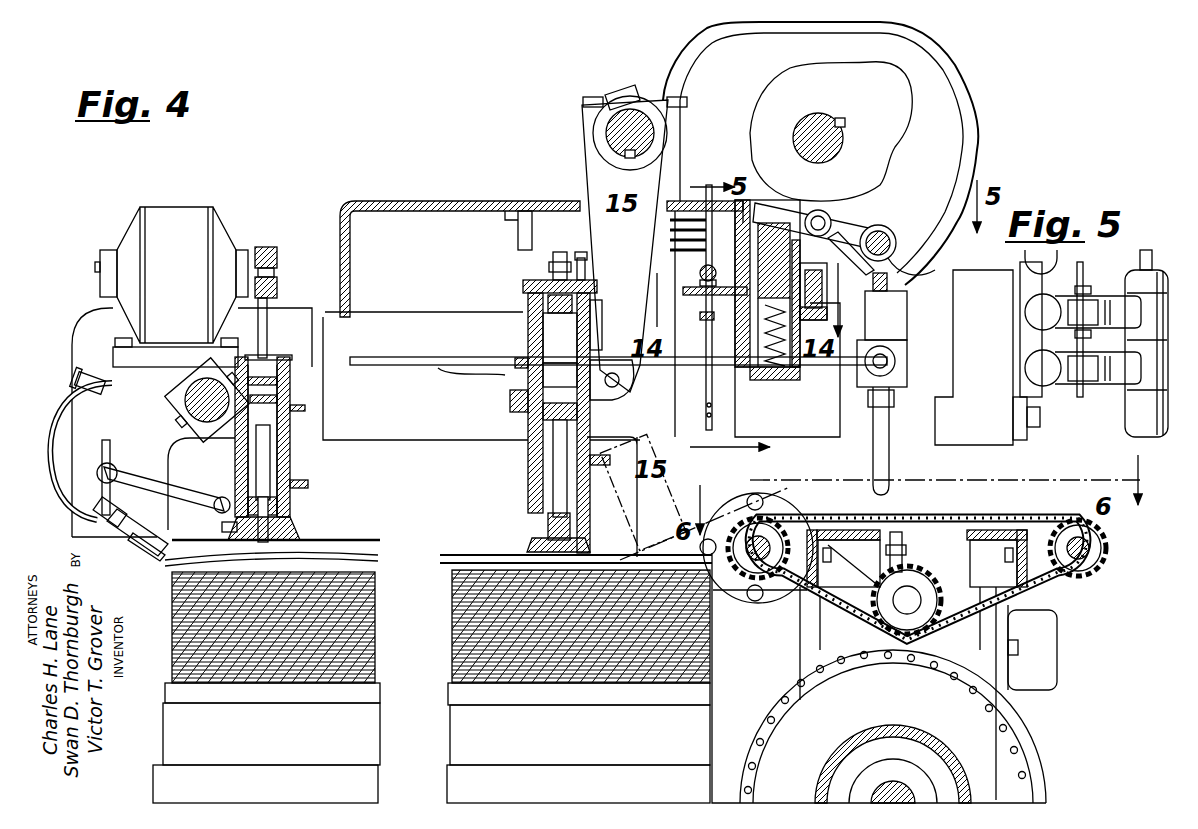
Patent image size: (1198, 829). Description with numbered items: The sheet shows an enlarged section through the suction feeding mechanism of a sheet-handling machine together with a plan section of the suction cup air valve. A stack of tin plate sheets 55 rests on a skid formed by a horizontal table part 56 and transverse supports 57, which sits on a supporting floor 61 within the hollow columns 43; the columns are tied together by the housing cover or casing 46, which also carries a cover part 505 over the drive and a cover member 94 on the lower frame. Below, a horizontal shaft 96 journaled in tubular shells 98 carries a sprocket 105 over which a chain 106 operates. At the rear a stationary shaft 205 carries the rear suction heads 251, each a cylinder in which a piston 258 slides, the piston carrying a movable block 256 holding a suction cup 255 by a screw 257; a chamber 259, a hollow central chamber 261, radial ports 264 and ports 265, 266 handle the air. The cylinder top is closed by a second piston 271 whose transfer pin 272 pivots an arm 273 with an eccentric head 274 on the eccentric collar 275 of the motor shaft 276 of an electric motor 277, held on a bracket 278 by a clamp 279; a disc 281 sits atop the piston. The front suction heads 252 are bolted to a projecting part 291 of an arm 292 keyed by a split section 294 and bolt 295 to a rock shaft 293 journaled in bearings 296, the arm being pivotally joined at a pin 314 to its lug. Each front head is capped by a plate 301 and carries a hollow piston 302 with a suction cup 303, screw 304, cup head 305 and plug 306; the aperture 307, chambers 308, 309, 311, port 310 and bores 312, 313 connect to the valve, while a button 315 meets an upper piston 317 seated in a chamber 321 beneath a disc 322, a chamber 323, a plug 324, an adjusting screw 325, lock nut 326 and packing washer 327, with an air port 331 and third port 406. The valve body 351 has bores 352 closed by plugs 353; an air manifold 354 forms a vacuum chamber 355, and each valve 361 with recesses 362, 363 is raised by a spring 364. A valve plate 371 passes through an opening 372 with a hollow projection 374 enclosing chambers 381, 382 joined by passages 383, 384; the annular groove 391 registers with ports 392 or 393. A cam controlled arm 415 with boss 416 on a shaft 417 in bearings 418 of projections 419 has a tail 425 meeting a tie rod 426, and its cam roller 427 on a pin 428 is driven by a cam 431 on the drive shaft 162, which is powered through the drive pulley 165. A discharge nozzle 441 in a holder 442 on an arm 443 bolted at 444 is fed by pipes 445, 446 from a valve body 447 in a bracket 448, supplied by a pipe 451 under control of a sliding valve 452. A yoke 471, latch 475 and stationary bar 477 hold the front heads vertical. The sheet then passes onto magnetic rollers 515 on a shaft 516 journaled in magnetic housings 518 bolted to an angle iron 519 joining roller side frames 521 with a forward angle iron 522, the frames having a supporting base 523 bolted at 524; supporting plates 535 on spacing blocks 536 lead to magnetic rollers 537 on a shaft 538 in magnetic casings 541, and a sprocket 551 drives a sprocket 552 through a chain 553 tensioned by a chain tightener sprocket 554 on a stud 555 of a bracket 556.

In FIG. 4, the hollow columns 43 is at (414, 555).
In FIG. 4, the housing cover or casing 46 is at (720, 205).
In FIG. 5, the housing cover or casing 46 is at (997, 445).
In FIG. 4, the sheets 55 is at (385, 556).
In FIG. 4, the horizontal table part 56 is at (380, 693).
In FIG. 4, the transverse supports 57 is at (380, 730).
In FIG. 4, the supporting floor 61 is at (378, 782).
In FIG. 4, the cover 94 is at (1050, 665).
In FIG. 4, the horizontal shaft 96 is at (890, 783).
In FIG. 4, the tubular shells 98 is at (925, 770).
In FIG. 4, the sprocket 105 is at (874, 764).
In FIG. 4, the chain 106 is at (1035, 737).
In FIG. 4, the horizontal drive shaft 162 is at (825, 113).
In FIG. 4, the drive pulley 165 is at (962, 80).
In FIG. 4, the horizontal stationary supporting shaft 205 is at (200, 425).
In FIG. 4, the rear suction heads 251 is at (290, 467).
In FIG. 4, the front suction heads 252 is at (590, 418).
In FIG. 4, the suction rubber or suction cup 255 is at (300, 535).
In FIG. 4, the movable block 256 is at (290, 510).
In FIG. 4, the screw 257 is at (222, 528).
In FIG. 4, the piston 258 is at (236, 461).
In FIG. 4, the chamber 259 is at (248, 484).
In FIG. 4, the hollow central chamber 261 is at (268, 450).
In FIG. 4, the radial ports 264 is at (270, 433).
In FIG. 4, the port 265 is at (308, 485).
In FIG. 4, the second radial port 266 is at (305, 408).
In FIG. 4, the second piston 271 is at (285, 358).
In FIG. 4, the transfer pin 272 is at (277, 381).
In FIG. 4, the arm 273 is at (267, 318).
In FIG. 4, the eccentric strap form of head 274 is at (268, 247).
In FIG. 4, the eccentric collar 275 is at (278, 260).
In FIG. 4, the motor shaft 276 is at (276, 271).
In FIG. 4, the electric motor 277 is at (171, 275).
In FIG. 4, the bracket 278 is at (193, 347).
In FIG. 4, the clamp 279 is at (185, 410).
In FIG. 4, the disc 281 is at (277, 399).
In FIG. 4, the projecting part 291 is at (592, 295).
In FIG. 4, the arm 292 is at (606, 186).
In FIG. 4, the rock shaft 293 is at (612, 135).
In FIG. 4, the split section 294 is at (640, 105).
In FIG. 4, the bolt 295 is at (617, 85).
In FIG. 4, the bearings 296 is at (582, 160).
In FIG. 4, the plate 301 is at (525, 285).
In FIG. 4, the hollow piston 302 is at (530, 468).
In FIG. 4, the suction rubber or cup 303 is at (588, 547).
In FIG. 4, the threaded screw 304 is at (548, 520).
In FIG. 4, the cup head 305 is at (535, 540).
In FIG. 4, the plug 306 is at (545, 510).
In FIG. 4, the central aperture 307 is at (575, 490).
In FIG. 4, the chamber 308 is at (553, 452).
In FIG. 4, the chamber 309 is at (530, 433).
In FIG. 4, the small port 310 is at (577, 428).
In FIG. 4, the chamber 311 is at (560, 375).
In FIG. 4, the radial bore 312 is at (515, 362).
In FIG. 4, the radial bore 313 is at (620, 455).
In FIG. 4, the pin 314 is at (600, 348).
In FIG. 4, the button 315 is at (592, 405).
In FIG. 4, the upper piston 317 is at (532, 312).
In FIG. 4, the chamber 321 is at (530, 300).
In FIG. 4, the disc 322 is at (590, 285).
In FIG. 4, the central chamber 323 is at (543, 345).
In FIG. 4, the plug 324 is at (602, 315).
In FIG. 4, the adjusting screw 325 is at (549, 268).
In FIG. 4, the lock nut 326 is at (558, 258).
In FIG. 4, the packing washer 327 is at (550, 285).
In FIG. 4, the air port 331 is at (543, 330).
In FIG. 4, the valve body or cylinder block 351 is at (800, 372).
In FIG. 5, the valve body or cylinder block 351 is at (1013, 288).
In FIG. 4, the cylindrical bores 352 is at (800, 380).
In FIG. 5, the cylindrical bores 352 is at (1020, 263).
In FIG. 4, the plug 353 is at (775, 380).
In FIG. 4, the air manifold 354 is at (851, 253).
In FIG. 4, the manifold chamber 355 is at (827, 285).
In FIG. 4, the valve 361 is at (790, 240).
In FIG. 5, the valve 361 is at (990, 359).
In FIG. 4, the recess 362 is at (827, 303).
In FIG. 4, the recess 363 is at (815, 390).
In FIG. 4, the spring 364 is at (787, 390).
In FIG. 4, the valve plate 371 is at (706, 345).
In FIG. 4, the opening 372 is at (703, 235).
In FIG. 4, the hollow projection 374 is at (700, 292).
In FIG. 4, the chamber 381 is at (700, 283).
In FIG. 4, the chamber 382 is at (702, 318).
In FIG. 4, the air passage 383 is at (700, 270).
In FIG. 4, the air passage 384 is at (710, 330).
In FIG. 4, the annular groove 391 is at (815, 219).
In FIG. 4, the second port 392 is at (827, 223).
In FIG. 4, the second port 393 is at (814, 313).
In FIG. 4, the third port 406 is at (582, 258).
In FIG. 4, the cam controlled arm 415 is at (775, 215).
In FIG. 5, the cam controlled arm 415 is at (1025, 318).
In FIG. 4, the boss 416 is at (895, 235).
In FIG. 5, the boss 416 is at (1111, 312).
In FIG. 4, the horizontal stationary shaft 417 is at (898, 243).
In FIG. 5, the horizontal stationary shaft 417 is at (1135, 437).
In FIG. 5, the bearings 418 is at (1140, 400).
In FIG. 4, the projections 419 is at (880, 225).
In FIG. 5, the projections 419 is at (1085, 430).
In FIG. 4, the tail 425 is at (905, 252).
In FIG. 4, the tie rod 426 is at (905, 258).
In FIG. 5, the tie rod 426 is at (1140, 258).
In FIG. 4, the cam roller 427 is at (835, 215).
In FIG. 5, the cam roller 427 is at (1083, 381).
In FIG. 4, the pin 428 is at (818, 210).
In FIG. 5, the pin 428 is at (1100, 285).
In FIG. 4, the cam 431 is at (888, 85).
In FIG. 4, the discharge nozzle 441 is at (158, 552).
In FIG. 4, the holder 442 is at (95, 510).
In FIG. 4, the arm 443 is at (164, 489).
In FIG. 4, the bolt 444 is at (214, 505).
In FIG. 4, the pipe 445 is at (78, 370).
In FIG. 4, the pipe 446 is at (441, 355).
In FIG. 4, the valve body 447 is at (897, 378).
In FIG. 4, the bracket 448 is at (868, 405).
In FIG. 4, the pipe 451 is at (889, 455).
In FIG. 4, the sliding valve 452 is at (887, 290).
In FIG. 4, the yoke 471 is at (608, 462).
In FIG. 4, the latch 475 is at (468, 372).
In FIG. 4, the stationary bar 477 is at (510, 405).
In FIG. 4, the cover 505 is at (935, 65).
In FIG. 4, the magnetic rollers 515 is at (740, 520).
In FIG. 4, the horizontal shaft 516 is at (748, 565).
In FIG. 4, the magnetic housing 518 is at (790, 580).
In FIG. 4, the angle iron 519 is at (860, 530).
In FIG. 4, the roller side frames 521 is at (917, 559).
In FIG. 4, the forward angle iron 522 is at (1000, 530).
In FIG. 4, the supporting base 523 is at (733, 500).
In FIG. 4, the bolt 524 is at (755, 600).
In FIG. 4, the supporting plates 535 is at (940, 512).
In FIG. 4, the spacing blocks 536 is at (820, 520).
In FIG. 4, the magnetic rollers 537 is at (1090, 560).
In FIG. 4, the horizontal shaft 538 is at (1083, 558).
In FIG. 4, the magnetic casings 541 is at (1050, 580).
In FIG. 4, the sprocket 551 is at (765, 545).
In FIG. 4, the sprocket 552 is at (1095, 555).
In FIG. 4, the chain 553 is at (1040, 600).
In FIG. 4, the chain tightener sprocket 554 is at (940, 605).
In FIG. 4, the stud 555 is at (907, 600).
In FIG. 4, the bracket 556 is at (905, 557).